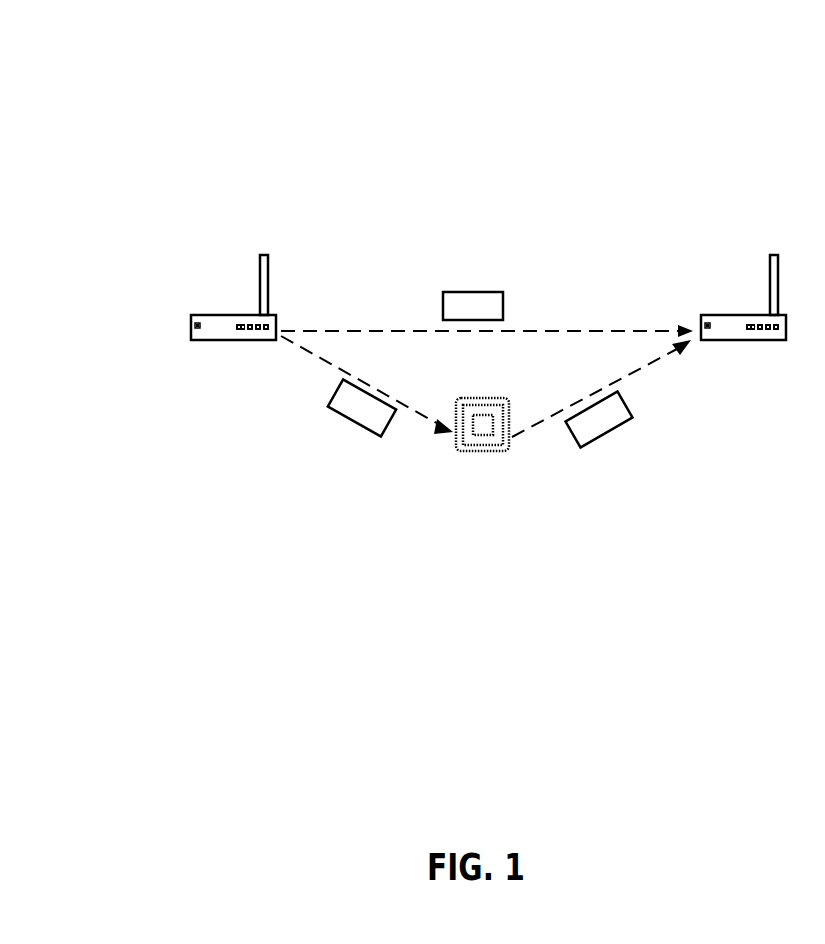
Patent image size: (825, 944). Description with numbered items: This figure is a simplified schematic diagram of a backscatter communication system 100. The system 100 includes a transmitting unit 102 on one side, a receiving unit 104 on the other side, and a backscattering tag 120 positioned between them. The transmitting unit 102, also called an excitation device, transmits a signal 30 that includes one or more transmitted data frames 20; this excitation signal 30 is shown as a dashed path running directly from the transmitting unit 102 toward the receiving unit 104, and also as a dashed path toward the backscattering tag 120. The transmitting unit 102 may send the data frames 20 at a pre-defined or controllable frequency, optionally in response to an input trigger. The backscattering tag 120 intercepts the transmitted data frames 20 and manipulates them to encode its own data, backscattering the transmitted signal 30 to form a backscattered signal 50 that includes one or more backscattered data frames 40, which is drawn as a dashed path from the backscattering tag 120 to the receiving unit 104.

The backscatter communication system 100 is at (186, 60).
The transmitting unit 102 is at (213, 315).
The receiving unit 104 is at (720, 315).
The transmitted data frames 20 is at (468, 292).
The transmitted signal 30 is at (368, 331).
The backscattered data frames 40 is at (598, 438).
The backscattered signal 50 is at (657, 362).
The backscattering tag 120 is at (468, 452).